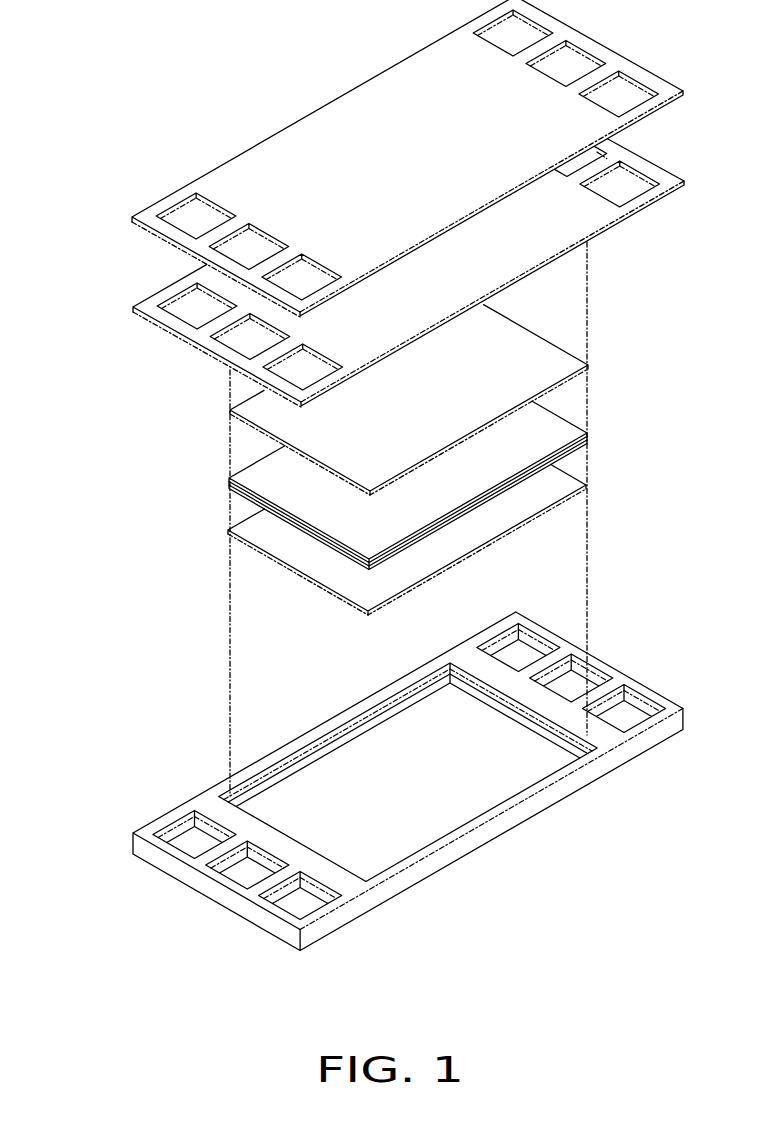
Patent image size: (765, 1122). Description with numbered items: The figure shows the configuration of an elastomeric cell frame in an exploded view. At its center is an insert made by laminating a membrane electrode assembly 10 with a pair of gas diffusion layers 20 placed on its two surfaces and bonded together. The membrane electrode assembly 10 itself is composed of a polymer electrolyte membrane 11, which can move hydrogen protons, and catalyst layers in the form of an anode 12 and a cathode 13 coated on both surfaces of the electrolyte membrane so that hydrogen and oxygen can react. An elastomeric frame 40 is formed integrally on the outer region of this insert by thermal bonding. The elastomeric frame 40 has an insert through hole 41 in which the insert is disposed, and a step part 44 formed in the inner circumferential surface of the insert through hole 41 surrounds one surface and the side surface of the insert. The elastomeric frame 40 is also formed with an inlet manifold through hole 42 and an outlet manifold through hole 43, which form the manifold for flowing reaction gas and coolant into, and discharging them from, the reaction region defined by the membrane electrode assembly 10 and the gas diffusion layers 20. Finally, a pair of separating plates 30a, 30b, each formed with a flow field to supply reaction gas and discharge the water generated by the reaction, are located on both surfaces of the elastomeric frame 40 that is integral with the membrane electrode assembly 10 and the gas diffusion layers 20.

The membrane electrode assembly 10 is at (345, 485).
The polymer electrolyte membrane 11 is at (368, 502).
The anode 12 is at (369, 505).
The cathode 13 is at (369, 481).
The gas diffusion layers 20 is at (250, 403).
The separating plate 30a is at (150, 211).
The separating plate 30b is at (143, 302).
The elastomeric frame 40 is at (408, 787).
The insert through hole 41 is at (487, 781).
The inlet manifold through hole 42 is at (303, 910).
The outlet manifold through hole 43 is at (572, 687).
The step part 44 is at (295, 767).